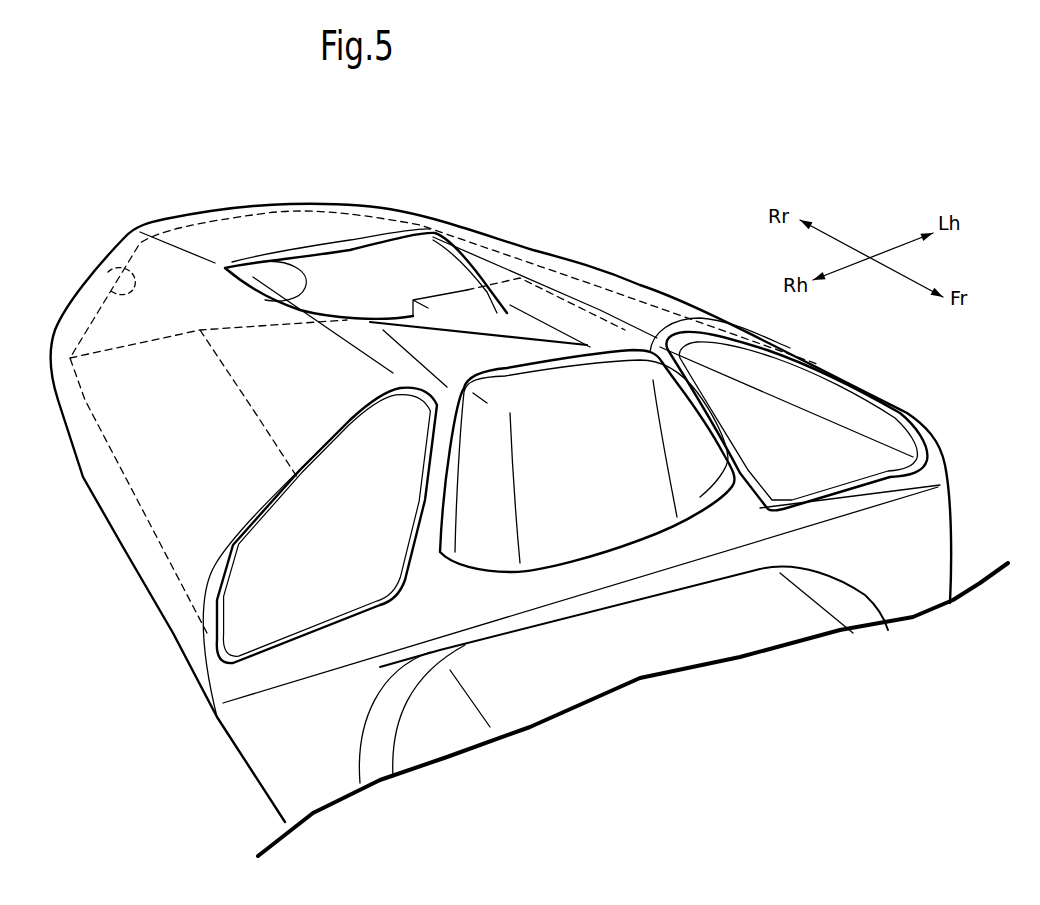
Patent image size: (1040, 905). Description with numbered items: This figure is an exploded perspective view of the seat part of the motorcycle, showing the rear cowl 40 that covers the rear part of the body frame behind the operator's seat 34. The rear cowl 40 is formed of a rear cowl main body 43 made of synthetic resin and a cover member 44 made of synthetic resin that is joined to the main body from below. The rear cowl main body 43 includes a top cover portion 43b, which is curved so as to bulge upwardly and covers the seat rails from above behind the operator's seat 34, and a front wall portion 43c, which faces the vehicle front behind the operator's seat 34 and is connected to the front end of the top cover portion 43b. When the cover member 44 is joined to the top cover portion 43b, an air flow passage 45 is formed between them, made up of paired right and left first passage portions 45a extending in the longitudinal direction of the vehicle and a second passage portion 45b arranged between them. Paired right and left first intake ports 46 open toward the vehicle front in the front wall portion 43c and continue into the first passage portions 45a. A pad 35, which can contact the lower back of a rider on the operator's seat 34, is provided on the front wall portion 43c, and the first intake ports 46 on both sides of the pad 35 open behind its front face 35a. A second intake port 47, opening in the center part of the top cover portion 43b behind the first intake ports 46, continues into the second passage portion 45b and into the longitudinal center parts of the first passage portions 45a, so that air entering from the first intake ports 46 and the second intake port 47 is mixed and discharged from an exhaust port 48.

The operator's seat 34 is at (697, 647).
The pad 35 is at (615, 357).
The front face 35a is at (530, 475).
The rear cowl 40 is at (567, 175).
The rear cowl main body 43 is at (556, 250).
The top cover portion 43b is at (277, 228).
The front wall portion 43c is at (445, 592).
The cover member 44 is at (457, 320).
The air flow passage 45 is at (883, 447).
The first passage portions 45a is at (343, 582).
The second passage portion 45b is at (383, 292).
The first intake ports 46 is at (305, 630).
The second intake port 47 is at (290, 299).
The exhaust port 48 is at (110, 263).